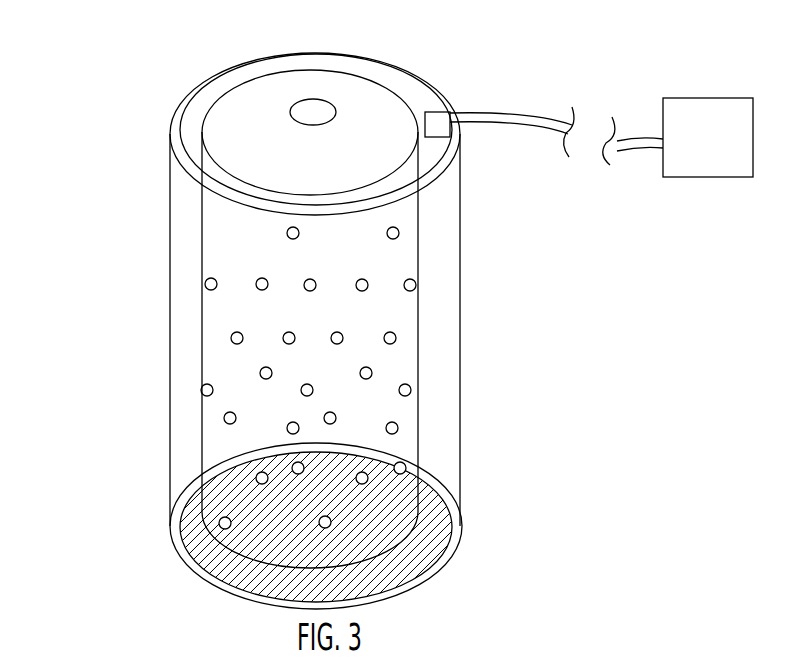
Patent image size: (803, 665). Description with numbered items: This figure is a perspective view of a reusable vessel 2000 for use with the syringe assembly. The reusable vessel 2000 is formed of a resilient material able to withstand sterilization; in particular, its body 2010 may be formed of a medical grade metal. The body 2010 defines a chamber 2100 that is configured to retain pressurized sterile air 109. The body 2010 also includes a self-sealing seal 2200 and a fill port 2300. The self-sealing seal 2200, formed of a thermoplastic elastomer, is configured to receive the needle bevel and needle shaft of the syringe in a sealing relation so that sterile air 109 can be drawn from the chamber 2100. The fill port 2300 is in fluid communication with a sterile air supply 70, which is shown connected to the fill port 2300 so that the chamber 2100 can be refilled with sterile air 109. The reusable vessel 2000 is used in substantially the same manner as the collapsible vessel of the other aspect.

The reusable vessel 2000 is at (115, 285).
The body 2010 is at (438, 172).
The pressurized sterile air 109 is at (418, 318).
The chamber 2100 is at (420, 485).
The self-sealing seal 2200 is at (318, 108).
The fill port 2300 is at (435, 122).
The sterile air supply 70 is at (720, 98).